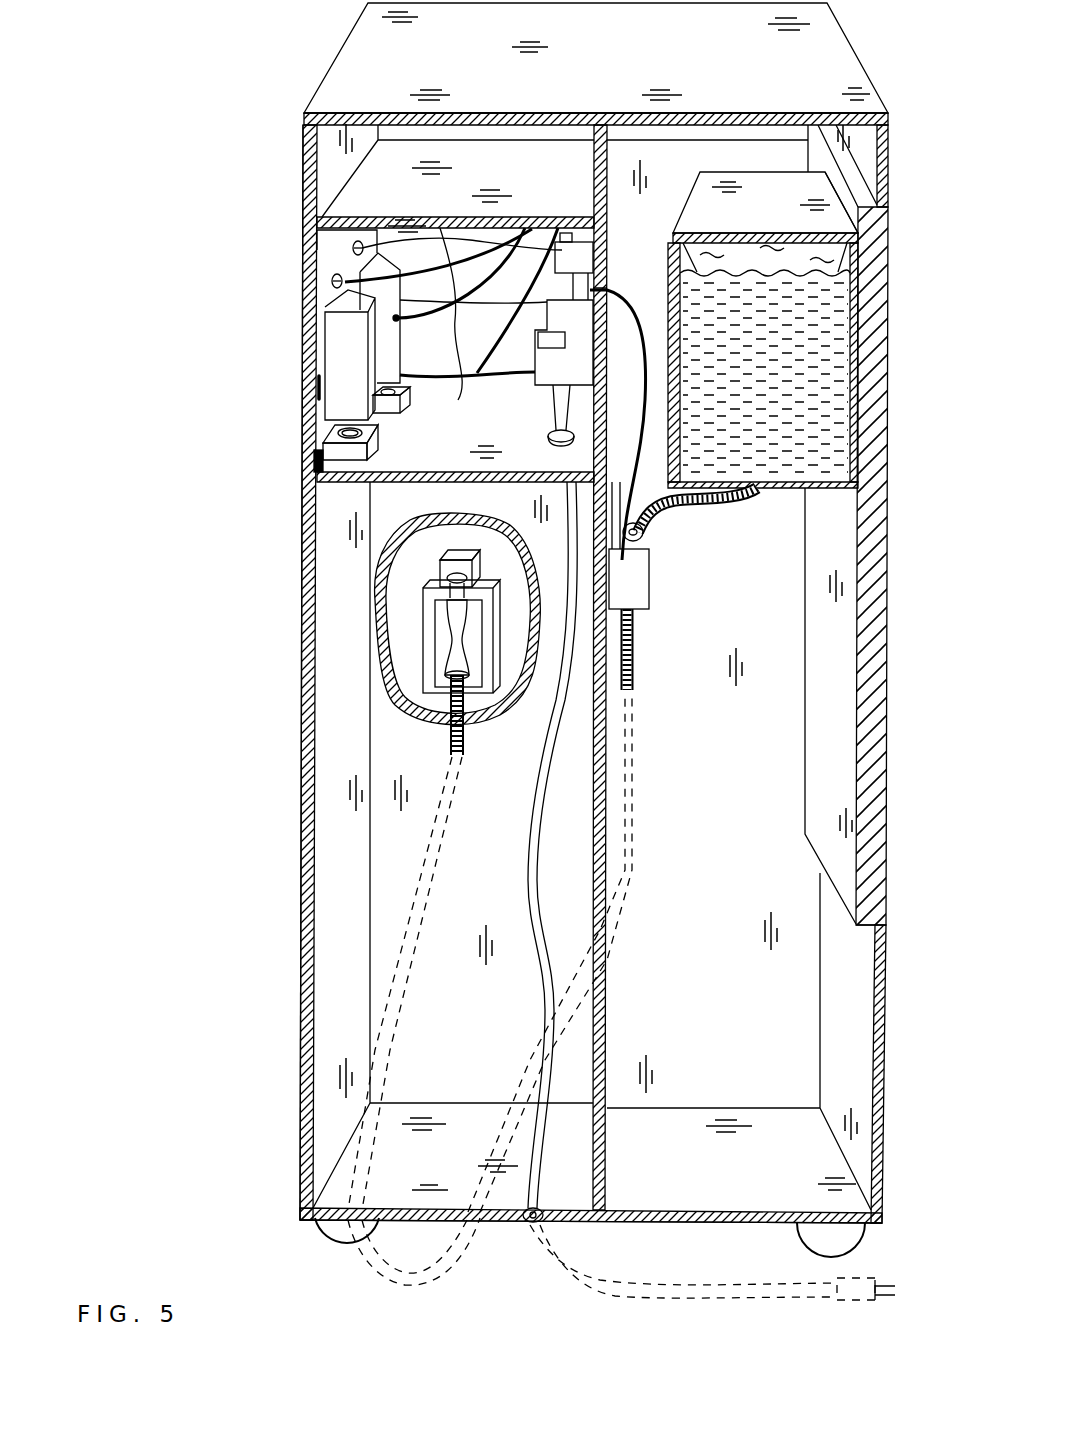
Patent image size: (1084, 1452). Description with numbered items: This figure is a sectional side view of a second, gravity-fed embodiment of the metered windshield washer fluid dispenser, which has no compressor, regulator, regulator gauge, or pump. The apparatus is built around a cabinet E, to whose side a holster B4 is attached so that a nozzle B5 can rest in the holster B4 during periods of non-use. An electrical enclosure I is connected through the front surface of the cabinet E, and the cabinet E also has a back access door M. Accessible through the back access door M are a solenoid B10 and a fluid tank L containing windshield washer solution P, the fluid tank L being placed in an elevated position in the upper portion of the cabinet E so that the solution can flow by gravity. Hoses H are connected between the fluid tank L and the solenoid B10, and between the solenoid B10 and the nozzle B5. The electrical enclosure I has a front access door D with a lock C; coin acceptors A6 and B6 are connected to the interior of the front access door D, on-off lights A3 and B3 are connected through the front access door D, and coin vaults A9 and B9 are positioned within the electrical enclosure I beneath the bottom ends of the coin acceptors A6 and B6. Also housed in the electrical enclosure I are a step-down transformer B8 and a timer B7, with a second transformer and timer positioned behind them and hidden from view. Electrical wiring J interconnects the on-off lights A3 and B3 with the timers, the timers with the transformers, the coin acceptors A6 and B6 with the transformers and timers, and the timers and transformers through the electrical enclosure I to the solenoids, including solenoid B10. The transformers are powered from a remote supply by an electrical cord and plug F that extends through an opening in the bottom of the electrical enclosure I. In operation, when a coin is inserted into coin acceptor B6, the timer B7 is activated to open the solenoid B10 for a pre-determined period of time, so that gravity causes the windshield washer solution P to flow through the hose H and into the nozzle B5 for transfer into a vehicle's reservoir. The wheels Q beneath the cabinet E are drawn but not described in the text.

The electrical enclosure I is at (307, 196).
The on-off light A3 is at (318, 233).
The coin acceptor A6 is at (352, 249).
The on-off light B3 is at (330, 281).
The coin acceptor B6 is at (330, 306).
The front access door D is at (303, 348).
The lock C is at (305, 387).
The coin vault B9 is at (330, 452).
The coin vault A9 is at (383, 420).
The electrical wiring J is at (440, 227).
The timer B7 is at (553, 230).
The step-down transformer B8 is at (540, 390).
The fluid tank L is at (840, 220).
The windshield washer solution P is at (832, 349).
The back access door M is at (880, 428).
The hose H is at (706, 498).
The solenoid B10 is at (650, 572).
The nozzle B5 is at (447, 580).
The holster B4 is at (430, 658).
The electrical cord and plug F is at (545, 795).
The cabinet E is at (300, 1197).
The wheel Q is at (320, 1236).